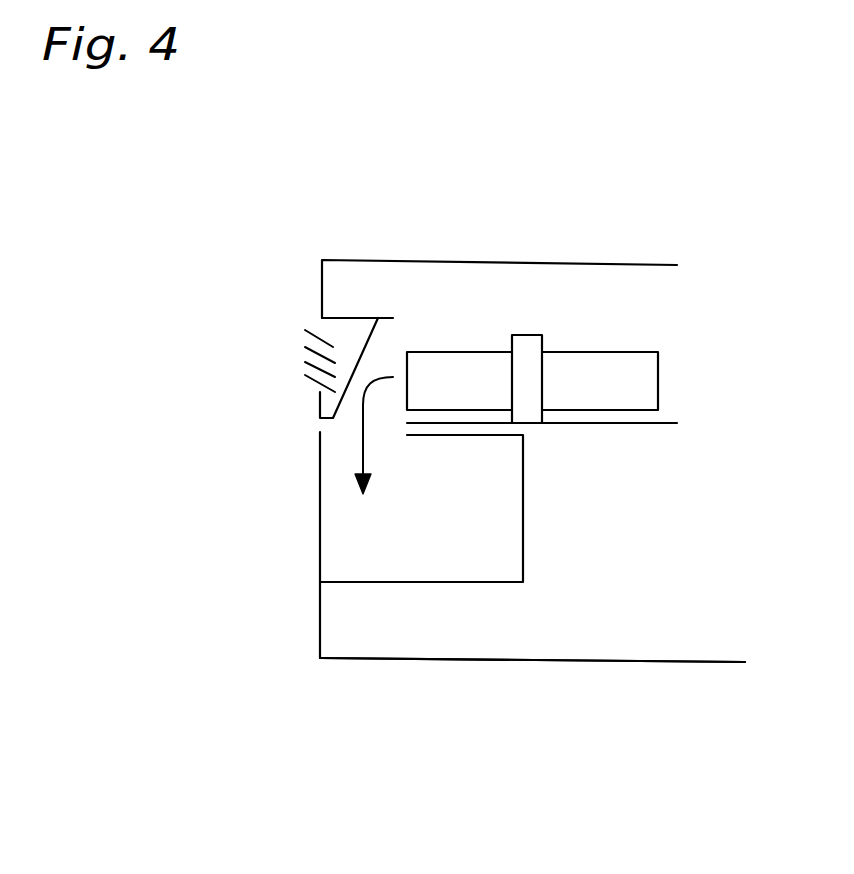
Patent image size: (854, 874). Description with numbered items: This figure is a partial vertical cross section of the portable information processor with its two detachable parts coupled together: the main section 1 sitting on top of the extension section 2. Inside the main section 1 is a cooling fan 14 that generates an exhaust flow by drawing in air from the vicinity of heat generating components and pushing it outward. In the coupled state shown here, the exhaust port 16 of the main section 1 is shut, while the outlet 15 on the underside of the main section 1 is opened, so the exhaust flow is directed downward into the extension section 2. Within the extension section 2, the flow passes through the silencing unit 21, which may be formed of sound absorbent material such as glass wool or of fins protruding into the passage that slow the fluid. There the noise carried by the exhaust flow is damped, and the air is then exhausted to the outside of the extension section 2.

The main section 1 is at (358, 253).
The extension section 2 is at (598, 668).
The cooling fan 14 is at (612, 373).
The outlet 15 is at (338, 404).
The exhaust port 16 is at (310, 379).
The silencing unit 21 is at (335, 544).